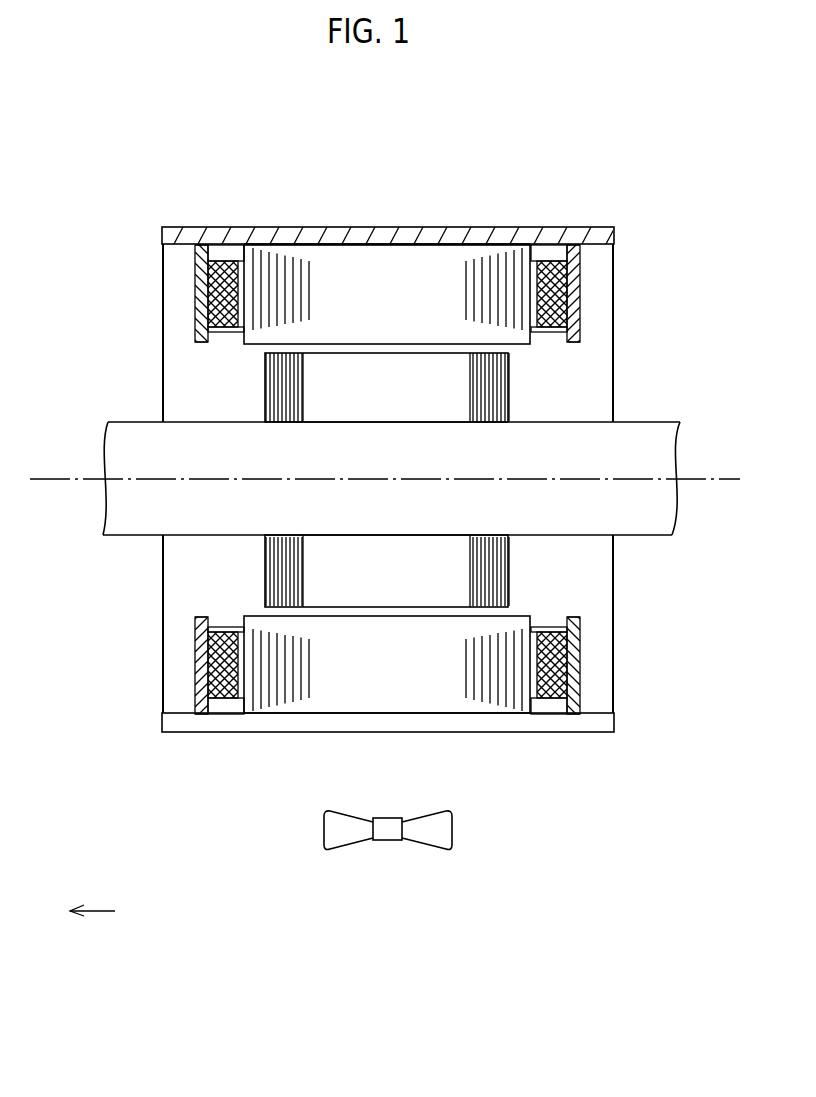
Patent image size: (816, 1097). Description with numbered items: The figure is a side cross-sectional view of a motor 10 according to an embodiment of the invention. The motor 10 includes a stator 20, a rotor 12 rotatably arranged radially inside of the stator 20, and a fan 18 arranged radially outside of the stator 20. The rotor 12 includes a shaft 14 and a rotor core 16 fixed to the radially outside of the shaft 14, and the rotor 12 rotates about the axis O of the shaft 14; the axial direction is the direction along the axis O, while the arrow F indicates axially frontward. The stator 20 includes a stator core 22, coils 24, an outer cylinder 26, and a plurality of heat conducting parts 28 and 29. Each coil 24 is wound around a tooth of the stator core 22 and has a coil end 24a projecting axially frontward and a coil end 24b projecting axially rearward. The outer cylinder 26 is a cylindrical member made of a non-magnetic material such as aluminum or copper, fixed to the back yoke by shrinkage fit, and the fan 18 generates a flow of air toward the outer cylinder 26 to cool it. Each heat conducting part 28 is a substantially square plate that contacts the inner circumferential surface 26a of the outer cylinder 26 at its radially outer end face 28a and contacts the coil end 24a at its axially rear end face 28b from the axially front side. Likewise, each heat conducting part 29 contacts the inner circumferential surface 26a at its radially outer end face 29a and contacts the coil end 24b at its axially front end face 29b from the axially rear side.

The motor 10 is at (678, 85).
The rotor 12 is at (75, 368).
The shaft 14 is at (137, 434).
The rotor core 16 is at (285, 396).
The fan 18 is at (388, 832).
The stator 20 is at (553, 199).
The stator core 22 is at (355, 241).
The coil 24 is at (228, 262).
The coil end 24a is at (208, 302).
The coil end 24b is at (566, 302).
The outer cylinder 26 is at (440, 234).
The inner circumferential surface 26a is at (405, 246).
The heat conducting part 28 is at (201, 280).
The radially outer end face 28a is at (201, 246).
The axially rear end face 28b is at (208, 342).
The heat conducting part 29 is at (575, 287).
The radially outer end face 29a is at (570, 228).
The axially front end face 29b is at (563, 334).
The axis O is at (691, 472).